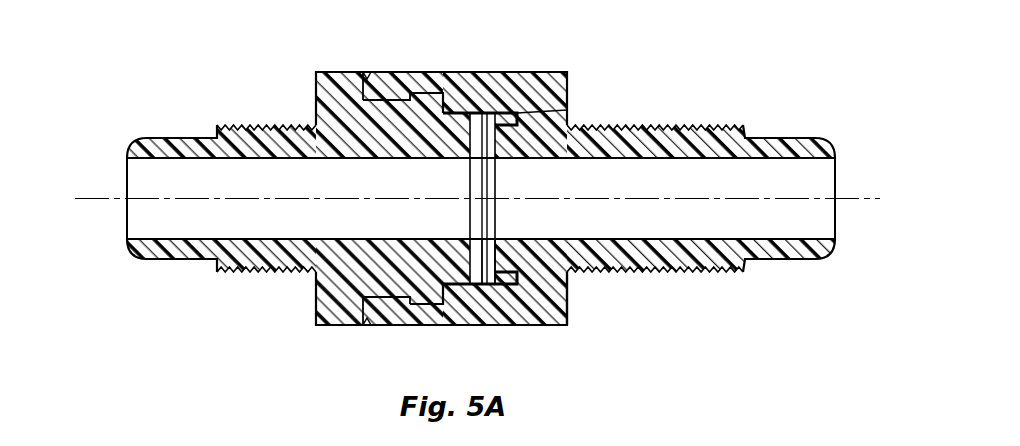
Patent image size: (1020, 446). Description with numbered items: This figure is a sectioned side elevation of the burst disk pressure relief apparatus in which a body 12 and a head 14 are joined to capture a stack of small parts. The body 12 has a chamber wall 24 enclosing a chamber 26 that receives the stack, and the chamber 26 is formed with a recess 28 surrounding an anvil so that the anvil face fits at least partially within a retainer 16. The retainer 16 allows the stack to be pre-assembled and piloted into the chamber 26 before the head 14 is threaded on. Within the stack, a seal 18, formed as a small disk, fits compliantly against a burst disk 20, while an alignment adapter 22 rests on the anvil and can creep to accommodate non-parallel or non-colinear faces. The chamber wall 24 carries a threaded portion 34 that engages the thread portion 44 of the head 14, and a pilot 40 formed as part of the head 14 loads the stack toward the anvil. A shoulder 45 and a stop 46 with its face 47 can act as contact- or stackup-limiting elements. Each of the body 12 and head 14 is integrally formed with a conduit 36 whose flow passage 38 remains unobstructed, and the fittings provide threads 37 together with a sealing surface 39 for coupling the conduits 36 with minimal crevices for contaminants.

The body 12 is at (567, 77).
The head 14 is at (317, 73).
The retainer 16 is at (503, 120).
The seal 18 is at (482, 285).
The burst disk 20 is at (500, 250).
The alignment adapter 22 is at (497, 257).
The chamber wall 24 is at (567, 290).
The chamber 26 is at (482, 112).
The recess 28 is at (570, 110).
The threaded portion 34 is at (382, 327).
The conduit 36 is at (248, 125).
The threads 37 is at (173, 138).
The flow passage 38 is at (143, 180).
The sealing surface 39 is at (133, 252).
The pilot 40 is at (440, 300).
The thread portion 44 is at (390, 100).
The shoulder 45 is at (455, 93).
The stop 46 is at (343, 325).
The face 47 is at (372, 72).